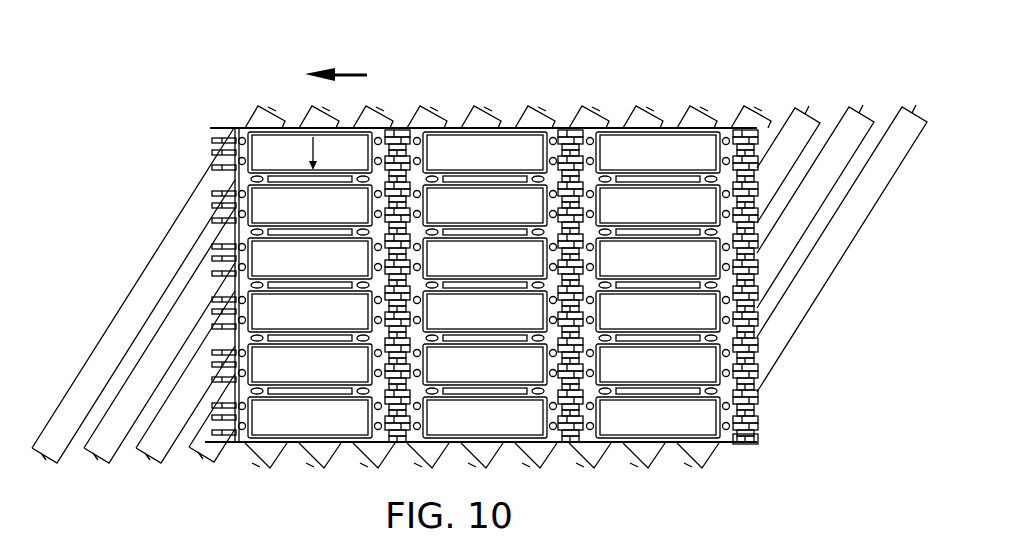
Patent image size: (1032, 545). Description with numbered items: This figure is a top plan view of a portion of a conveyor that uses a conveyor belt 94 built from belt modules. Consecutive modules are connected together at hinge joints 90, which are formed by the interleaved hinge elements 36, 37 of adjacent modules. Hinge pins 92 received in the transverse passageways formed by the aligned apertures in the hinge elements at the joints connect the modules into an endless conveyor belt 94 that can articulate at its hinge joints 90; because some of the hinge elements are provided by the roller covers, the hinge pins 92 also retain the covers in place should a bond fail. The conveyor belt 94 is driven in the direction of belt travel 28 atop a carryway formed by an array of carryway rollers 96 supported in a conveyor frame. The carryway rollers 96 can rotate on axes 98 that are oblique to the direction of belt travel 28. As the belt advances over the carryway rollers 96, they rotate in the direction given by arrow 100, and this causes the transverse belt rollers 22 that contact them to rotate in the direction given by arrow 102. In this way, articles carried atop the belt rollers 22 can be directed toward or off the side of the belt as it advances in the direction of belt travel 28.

The transverse belt rollers 22 is at (672, 161).
The direction of belt travel 28 is at (344, 75).
The hinge elements 36 is at (221, 128).
The hinge elements 37 is at (750, 444).
The hinge joints 90 is at (568, 446).
The hinge pins 92 is at (760, 138).
The conveyor belt 94 is at (394, 127).
The carryway rollers 96 is at (796, 328).
The axes 98 is at (564, 127).
The arrow 100 is at (180, 259).
The arrow 102 is at (313, 152).